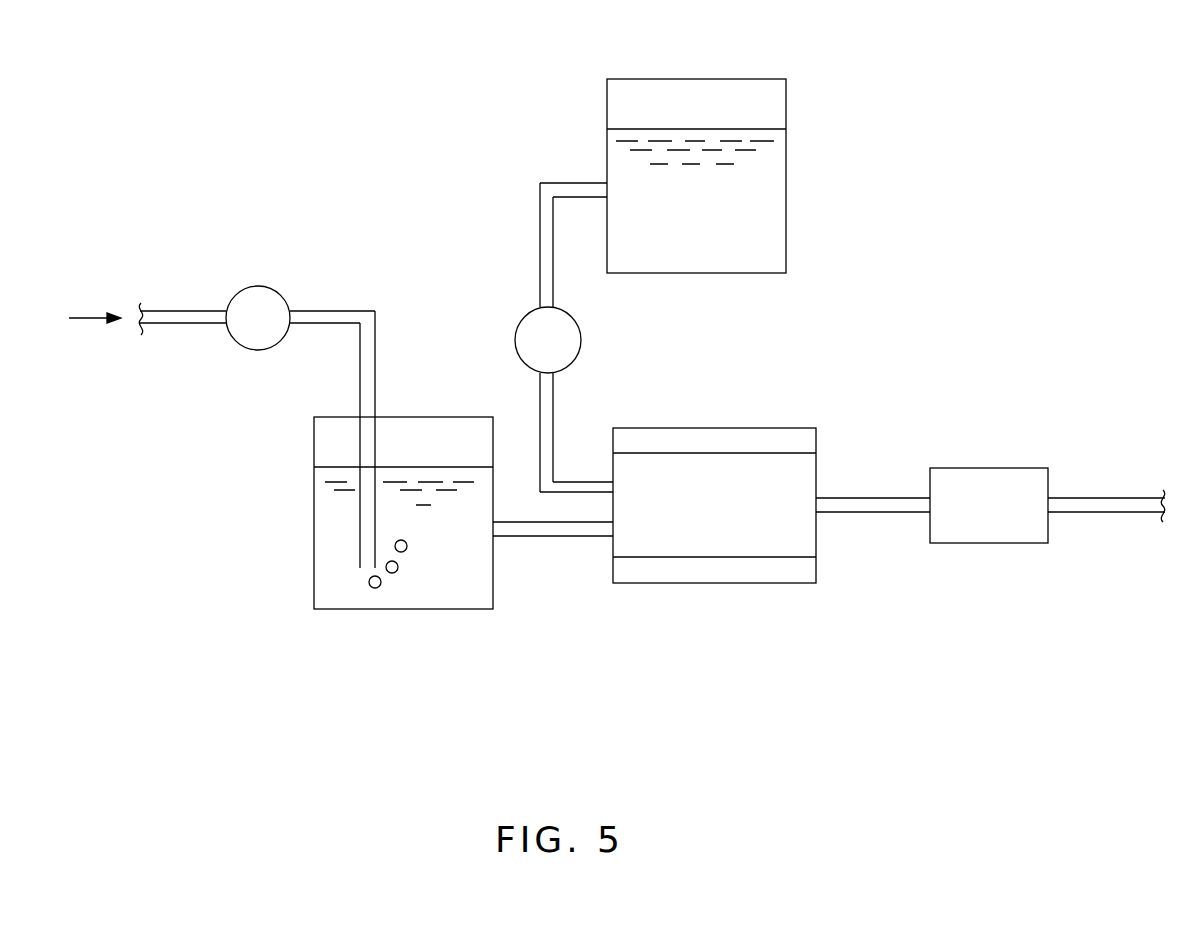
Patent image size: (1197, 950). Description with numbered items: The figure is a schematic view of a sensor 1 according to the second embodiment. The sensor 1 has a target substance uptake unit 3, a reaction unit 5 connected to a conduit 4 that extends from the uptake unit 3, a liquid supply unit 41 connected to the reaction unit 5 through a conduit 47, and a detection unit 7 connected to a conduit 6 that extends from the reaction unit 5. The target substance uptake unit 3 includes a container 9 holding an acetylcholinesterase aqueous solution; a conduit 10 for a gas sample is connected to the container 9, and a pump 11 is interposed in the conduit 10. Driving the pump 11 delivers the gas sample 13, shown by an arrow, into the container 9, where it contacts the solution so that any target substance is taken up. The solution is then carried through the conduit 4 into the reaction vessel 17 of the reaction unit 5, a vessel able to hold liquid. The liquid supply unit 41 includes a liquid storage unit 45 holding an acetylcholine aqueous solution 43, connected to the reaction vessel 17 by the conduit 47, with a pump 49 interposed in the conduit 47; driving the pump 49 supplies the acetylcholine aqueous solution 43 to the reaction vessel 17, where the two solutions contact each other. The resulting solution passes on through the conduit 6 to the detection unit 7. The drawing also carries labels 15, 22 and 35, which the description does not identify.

The sensor 1 is at (684, 31).
The target substance uptake unit 3 is at (360, 541).
The conduit 4 is at (558, 537).
The reaction unit 5 is at (714, 591).
The conduit 6 is at (878, 498).
The detection unit 7 is at (991, 432).
The container 9 is at (314, 579).
The conduit 10 is at (355, 311).
The pump 11 is at (262, 286).
The gas sample 13 is at (88, 306).
The liquid 15 is at (462, 589).
The reaction vessel 17 is at (670, 562).
The upper wall 22 is at (770, 428).
The discharge pipe 35 is at (1103, 498).
The liquid supply unit 41 is at (660, 271).
The acetylcholine aqueous solution 43 is at (775, 208).
The liquid storage unit 45 is at (727, 273).
The conduit 47 is at (538, 261).
The pump 49 is at (582, 338).